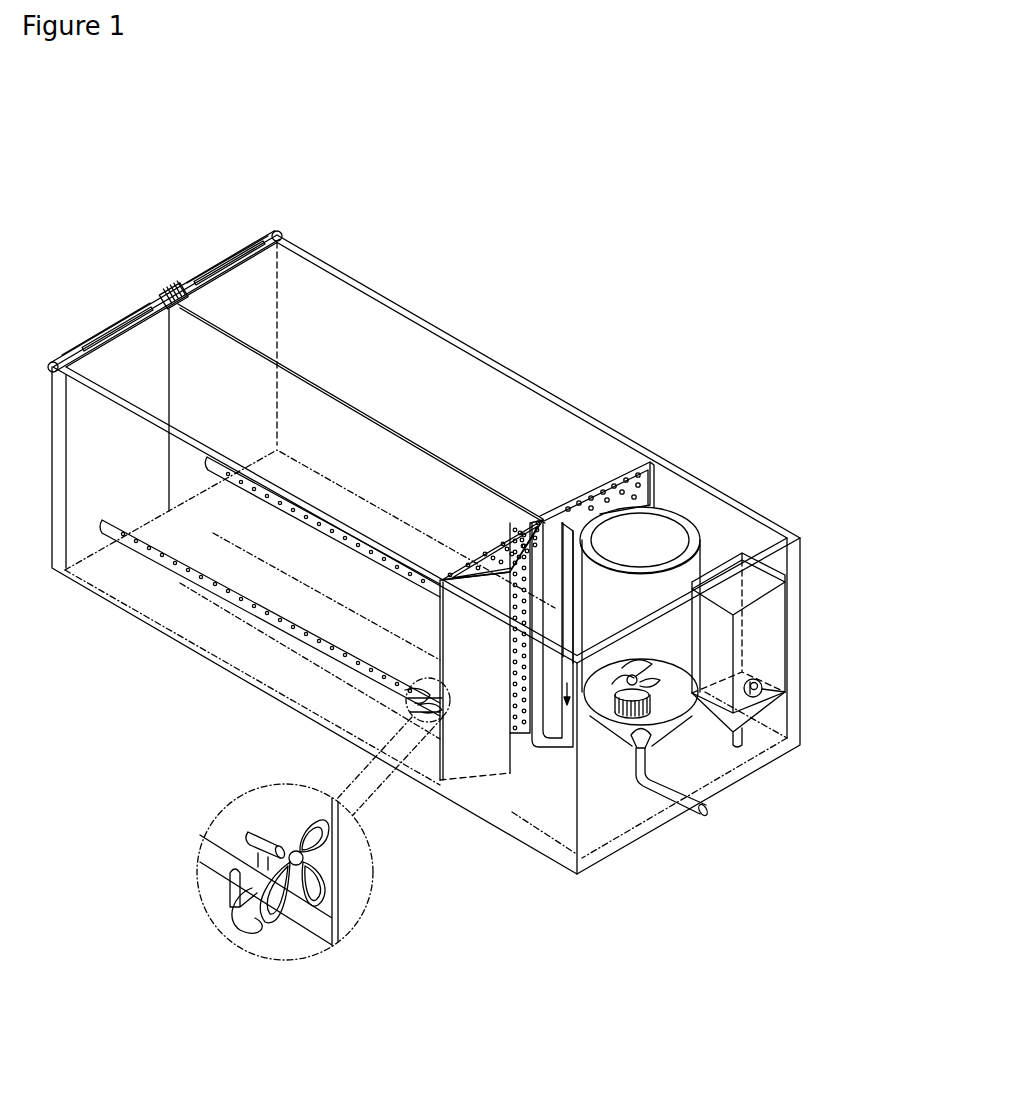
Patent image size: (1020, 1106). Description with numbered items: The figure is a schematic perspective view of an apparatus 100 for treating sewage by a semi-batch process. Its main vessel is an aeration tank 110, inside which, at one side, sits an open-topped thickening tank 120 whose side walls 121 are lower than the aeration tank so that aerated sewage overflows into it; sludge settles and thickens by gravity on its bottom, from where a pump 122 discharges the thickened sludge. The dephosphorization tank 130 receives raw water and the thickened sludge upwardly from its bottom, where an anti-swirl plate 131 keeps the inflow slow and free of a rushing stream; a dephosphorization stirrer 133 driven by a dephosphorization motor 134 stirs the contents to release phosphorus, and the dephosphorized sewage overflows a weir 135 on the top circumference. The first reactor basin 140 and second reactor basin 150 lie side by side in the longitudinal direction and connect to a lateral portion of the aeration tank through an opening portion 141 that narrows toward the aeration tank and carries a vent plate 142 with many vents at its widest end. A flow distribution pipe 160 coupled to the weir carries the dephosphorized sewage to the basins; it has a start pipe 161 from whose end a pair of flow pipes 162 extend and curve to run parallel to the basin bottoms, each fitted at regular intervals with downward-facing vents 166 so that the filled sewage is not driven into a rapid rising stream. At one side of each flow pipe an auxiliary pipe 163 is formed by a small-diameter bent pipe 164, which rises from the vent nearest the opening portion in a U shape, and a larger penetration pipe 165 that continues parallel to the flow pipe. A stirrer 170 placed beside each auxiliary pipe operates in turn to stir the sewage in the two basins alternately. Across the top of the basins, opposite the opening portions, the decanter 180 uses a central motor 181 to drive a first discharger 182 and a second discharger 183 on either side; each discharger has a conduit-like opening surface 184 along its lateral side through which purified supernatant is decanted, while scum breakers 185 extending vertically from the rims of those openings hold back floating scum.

The apparatus 100 is at (590, 199).
The aeration tank 110 is at (736, 522).
The thickening tank 120 is at (783, 643).
The side walls 121 is at (747, 553).
The pump 122 is at (762, 689).
The dephosphorization tank 130 is at (690, 500).
The anti-swirl plate 131 is at (640, 772).
The dephosphorization stirrer 133 is at (665, 690).
The dephosphorization motor 134 is at (652, 725).
The weir 135 is at (695, 488).
The first reactor basin 140 is at (320, 417).
The opening portion 141 is at (650, 487).
The vent plate 142 is at (490, 545).
The second reactor basin 150 is at (320, 295).
The flow distribution pipe 160 is at (546, 772).
The start pipe 161 is at (568, 618).
The flow pipe 162 is at (273, 498).
The auxiliary pipe 163 is at (208, 888).
The bent pipe 164 is at (235, 910).
The penetration pipe 165 is at (246, 834).
The vents 166 is at (357, 547).
The stirrer 170 is at (290, 927).
The decanter 180 is at (88, 246).
The central motor 181 is at (165, 290).
The first discharger 182 is at (54, 360).
The second discharger 183 is at (275, 236).
The opening surface 184 is at (214, 272).
The scum breakers 185 is at (110, 335).